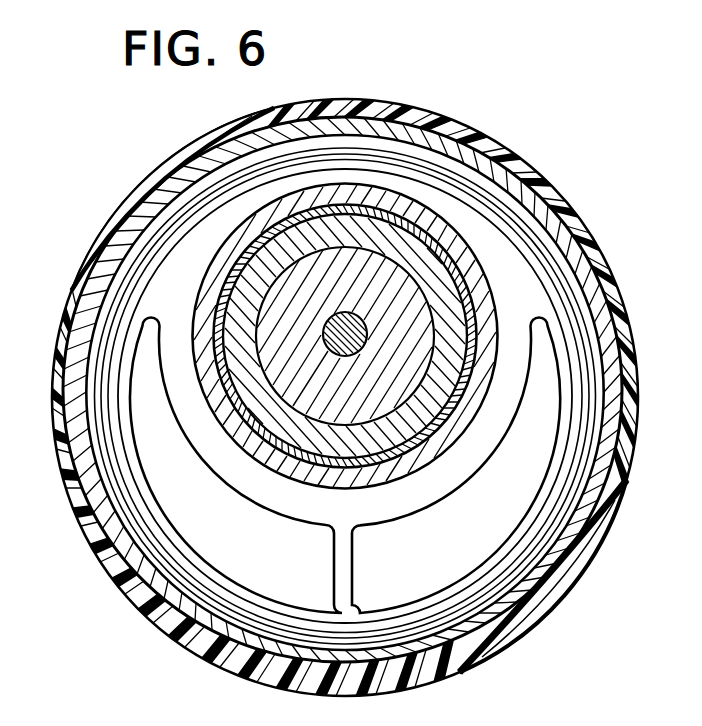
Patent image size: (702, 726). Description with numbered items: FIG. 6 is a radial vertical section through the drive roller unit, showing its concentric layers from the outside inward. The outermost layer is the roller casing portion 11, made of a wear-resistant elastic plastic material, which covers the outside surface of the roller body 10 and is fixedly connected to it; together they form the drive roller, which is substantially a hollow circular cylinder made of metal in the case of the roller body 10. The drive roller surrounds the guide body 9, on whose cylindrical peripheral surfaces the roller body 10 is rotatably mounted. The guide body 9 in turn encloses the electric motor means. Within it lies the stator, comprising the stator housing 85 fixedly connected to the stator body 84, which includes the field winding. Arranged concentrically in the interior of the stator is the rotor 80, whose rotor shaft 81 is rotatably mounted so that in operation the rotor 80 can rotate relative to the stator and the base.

The guide body 9 is at (442, 447).
The roller body 10 is at (112, 261).
The roller casing portion 11 is at (138, 203).
The rotor 80 is at (292, 332).
The rotor shaft 81 is at (323, 315).
The stator body 84 is at (255, 398).
The stator housing 85 is at (256, 432).